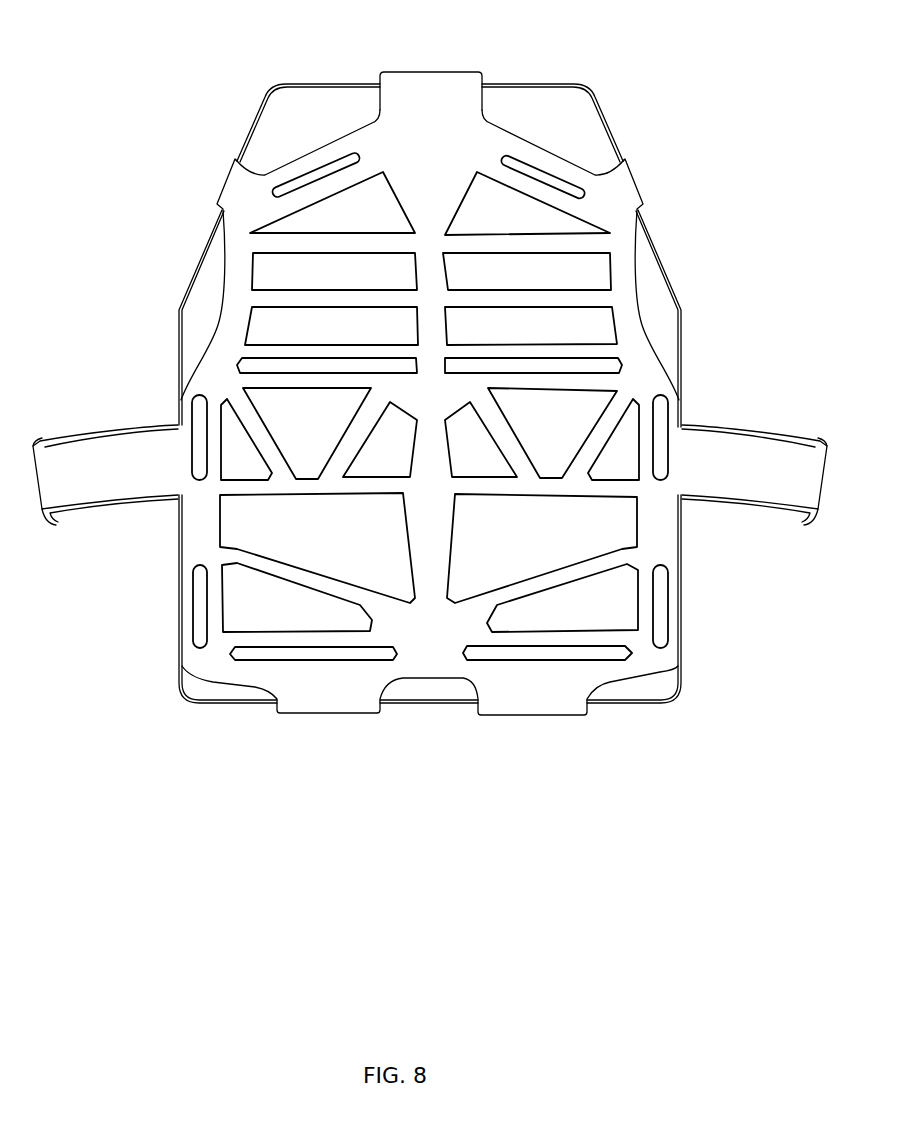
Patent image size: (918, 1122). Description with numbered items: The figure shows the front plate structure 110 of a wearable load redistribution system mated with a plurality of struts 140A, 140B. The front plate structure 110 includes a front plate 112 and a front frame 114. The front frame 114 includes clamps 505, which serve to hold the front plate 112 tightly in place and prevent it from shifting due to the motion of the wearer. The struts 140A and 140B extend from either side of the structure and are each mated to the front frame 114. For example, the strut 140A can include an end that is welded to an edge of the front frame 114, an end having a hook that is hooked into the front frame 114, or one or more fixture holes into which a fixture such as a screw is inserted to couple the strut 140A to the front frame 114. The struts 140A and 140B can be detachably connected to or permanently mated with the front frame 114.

The front plate structure 110 is at (272, 86).
The front plate 112 is at (570, 123).
The front frame 114 is at (623, 263).
The strut 140A is at (753, 447).
The strut 140B is at (107, 447).
The clamps 505 is at (450, 70).